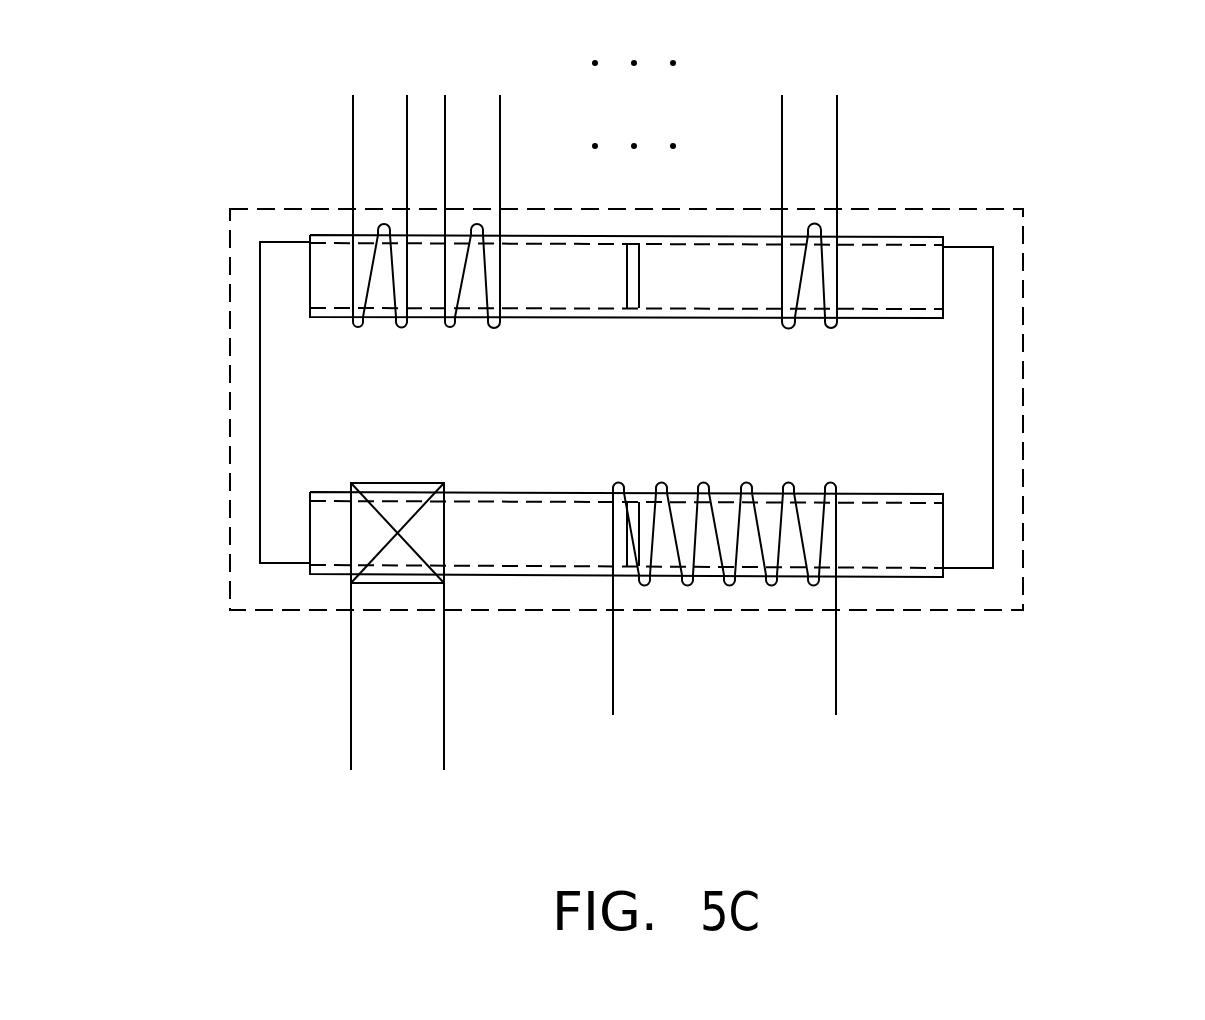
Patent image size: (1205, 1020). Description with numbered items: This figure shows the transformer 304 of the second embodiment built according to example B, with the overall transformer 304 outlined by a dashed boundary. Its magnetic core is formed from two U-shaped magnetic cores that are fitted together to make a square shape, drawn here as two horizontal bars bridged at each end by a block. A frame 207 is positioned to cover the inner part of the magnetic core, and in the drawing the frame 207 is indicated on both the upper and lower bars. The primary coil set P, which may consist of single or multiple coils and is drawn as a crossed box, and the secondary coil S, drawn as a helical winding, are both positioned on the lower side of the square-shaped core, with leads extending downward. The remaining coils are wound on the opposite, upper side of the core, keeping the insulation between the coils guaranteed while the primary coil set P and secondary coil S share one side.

The transformer 304 is at (1118, 78).
The frame 207 is at (545, 240).
The primary coil set P is at (397, 652).
The secondary coil S is at (724, 610).